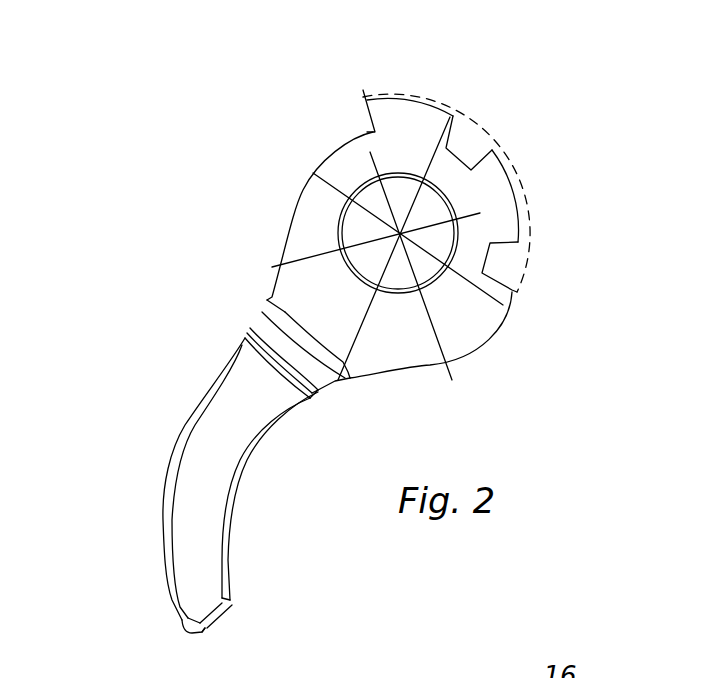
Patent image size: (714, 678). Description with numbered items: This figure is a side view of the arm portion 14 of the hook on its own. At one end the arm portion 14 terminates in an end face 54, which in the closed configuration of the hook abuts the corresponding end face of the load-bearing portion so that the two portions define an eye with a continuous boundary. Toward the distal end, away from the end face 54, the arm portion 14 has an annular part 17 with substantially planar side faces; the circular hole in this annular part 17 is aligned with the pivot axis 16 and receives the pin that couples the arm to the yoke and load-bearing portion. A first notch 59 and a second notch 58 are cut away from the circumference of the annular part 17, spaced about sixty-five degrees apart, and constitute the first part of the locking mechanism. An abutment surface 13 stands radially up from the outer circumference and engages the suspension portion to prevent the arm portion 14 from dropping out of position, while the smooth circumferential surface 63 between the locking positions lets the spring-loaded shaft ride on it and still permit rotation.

The abutment surface 13 is at (370, 112).
The arm portion 14 is at (203, 468).
The pivot axis 16 is at (398, 233).
The annular part 17 is at (333, 172).
The end face 54 is at (207, 626).
The second notch 58 is at (485, 260).
The first notch 59 is at (490, 135).
The smooth circumferential surface 63 is at (498, 143).